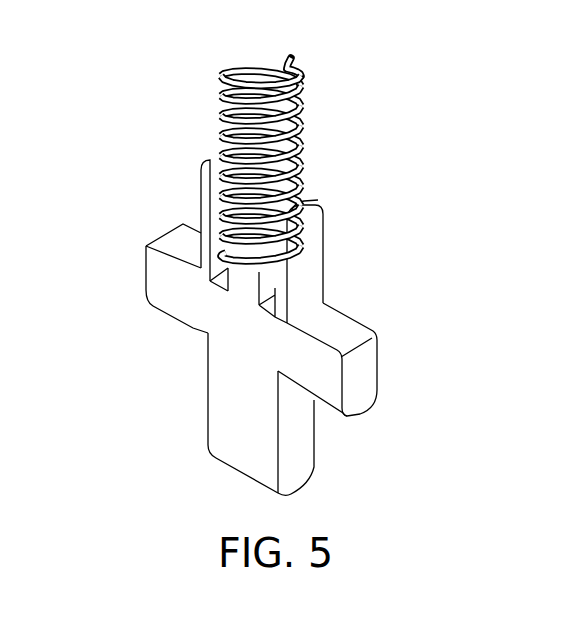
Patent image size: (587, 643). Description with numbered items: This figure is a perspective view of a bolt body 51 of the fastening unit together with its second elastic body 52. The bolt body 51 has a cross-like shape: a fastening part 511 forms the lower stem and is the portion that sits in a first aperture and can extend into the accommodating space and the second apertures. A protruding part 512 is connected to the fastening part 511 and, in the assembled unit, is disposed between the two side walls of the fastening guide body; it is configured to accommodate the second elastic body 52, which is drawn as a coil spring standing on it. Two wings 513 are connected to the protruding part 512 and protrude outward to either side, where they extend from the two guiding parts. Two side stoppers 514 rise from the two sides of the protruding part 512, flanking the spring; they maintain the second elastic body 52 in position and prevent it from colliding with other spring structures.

The bolt body 51 is at (401, 130).
The second elastic body 52 is at (222, 80).
The fastening part 511 is at (223, 390).
The protruding part 512 is at (249, 282).
The wing 513 is at (157, 279).
The side stopper 514 is at (204, 188).